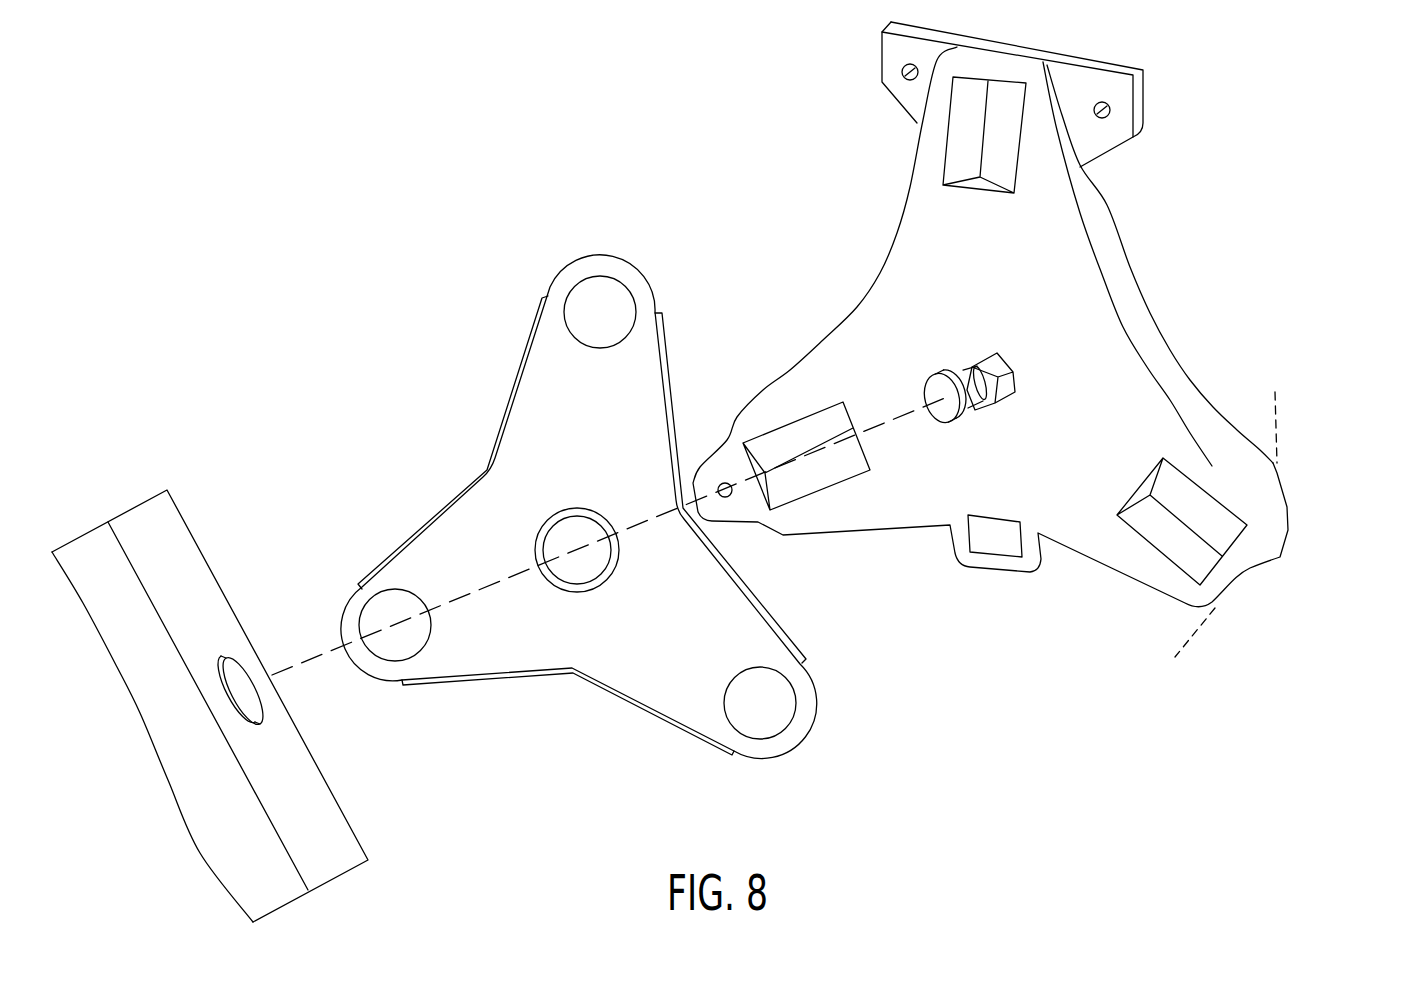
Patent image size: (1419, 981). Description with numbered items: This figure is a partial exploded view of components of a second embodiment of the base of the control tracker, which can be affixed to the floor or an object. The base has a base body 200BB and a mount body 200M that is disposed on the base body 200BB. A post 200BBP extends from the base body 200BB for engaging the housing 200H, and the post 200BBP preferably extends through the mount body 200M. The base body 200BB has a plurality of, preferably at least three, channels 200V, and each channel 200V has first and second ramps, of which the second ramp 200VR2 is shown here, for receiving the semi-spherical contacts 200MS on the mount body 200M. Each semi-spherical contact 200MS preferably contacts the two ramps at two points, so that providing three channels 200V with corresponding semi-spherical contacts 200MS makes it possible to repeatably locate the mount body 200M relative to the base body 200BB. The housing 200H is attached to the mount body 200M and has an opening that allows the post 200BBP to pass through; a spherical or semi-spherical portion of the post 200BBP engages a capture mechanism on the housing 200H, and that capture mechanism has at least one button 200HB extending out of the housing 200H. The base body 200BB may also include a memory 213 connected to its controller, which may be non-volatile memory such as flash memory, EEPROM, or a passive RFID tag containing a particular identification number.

The housing 200H is at (345, 833).
The button 200HB is at (228, 660).
The mount body 200M is at (683, 710).
The semi-spherical contacts 200MS is at (623, 295).
The base body 200BB is at (1142, 328).
The channels 200V is at (955, 154).
The second ramp 200VR2 is at (1217, 515).
The post 200BBP is at (968, 366).
The memory 213 is at (998, 547).